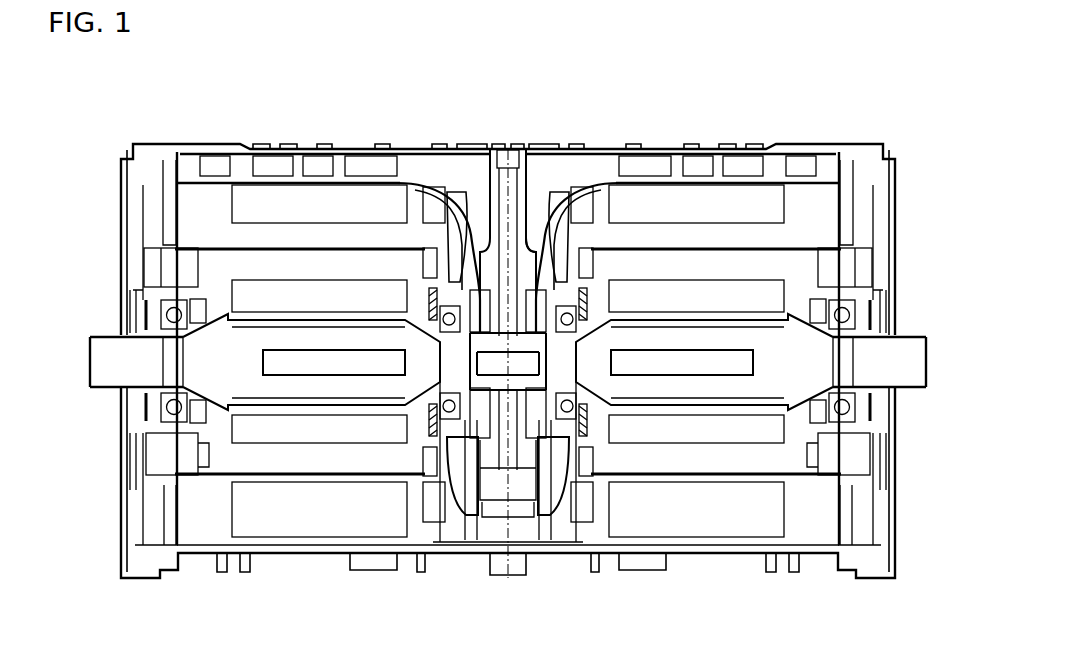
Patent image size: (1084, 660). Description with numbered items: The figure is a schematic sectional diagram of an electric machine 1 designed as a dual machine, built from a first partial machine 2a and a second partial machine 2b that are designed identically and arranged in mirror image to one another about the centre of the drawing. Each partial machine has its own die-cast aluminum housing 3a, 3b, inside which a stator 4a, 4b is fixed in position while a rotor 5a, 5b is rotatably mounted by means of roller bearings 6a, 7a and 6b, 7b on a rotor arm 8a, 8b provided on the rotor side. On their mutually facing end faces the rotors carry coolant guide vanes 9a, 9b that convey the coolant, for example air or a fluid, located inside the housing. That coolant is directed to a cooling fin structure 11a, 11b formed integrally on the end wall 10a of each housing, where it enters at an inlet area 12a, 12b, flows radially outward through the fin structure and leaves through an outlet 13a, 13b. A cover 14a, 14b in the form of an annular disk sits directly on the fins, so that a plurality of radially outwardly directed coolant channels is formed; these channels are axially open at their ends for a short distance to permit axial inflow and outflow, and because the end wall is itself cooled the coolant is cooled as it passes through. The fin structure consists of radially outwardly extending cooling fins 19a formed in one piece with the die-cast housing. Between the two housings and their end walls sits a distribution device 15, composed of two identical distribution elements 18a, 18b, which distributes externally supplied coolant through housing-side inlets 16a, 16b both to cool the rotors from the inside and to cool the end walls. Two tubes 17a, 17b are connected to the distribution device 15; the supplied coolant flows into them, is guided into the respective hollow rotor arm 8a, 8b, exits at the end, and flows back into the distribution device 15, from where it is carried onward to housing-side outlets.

The electric machine 1 is at (652, 70).
The first partial machine 2a is at (802, 130).
The second partial machine 2b is at (258, 120).
The housing 3a is at (668, 152).
The housing 3b is at (345, 152).
The stator 4a is at (662, 198).
The stator 4b is at (286, 200).
The rotor 5a is at (792, 270).
The rotor 5b is at (222, 274).
The roller bearing 6a is at (853, 320).
The roller bearing 6b is at (172, 411).
The roller bearing 7a is at (565, 470).
The roller bearing 7b is at (451, 470).
The rotor arm 8a is at (852, 414).
The rotor arm 8b is at (172, 336).
The coolant guide vanes 9a is at (578, 295).
The coolant guide vanes 9b is at (440, 298).
The end wall 10a is at (523, 165).
The cooling fin structure 11a is at (585, 272).
The cooling fin structure 11b is at (428, 277).
The inlet area 12a is at (586, 283).
The inlet area 12b is at (430, 282).
The outlet 13a is at (556, 210).
The outlet 13b is at (457, 195).
The cover 14a is at (628, 195).
The cover 14b is at (432, 190).
The distribution device 15 is at (502, 205).
The housing-side inlet 16a is at (571, 190).
The housing-side inlet 16b is at (350, 172).
The tube 17a is at (690, 375).
The tube 17b is at (293, 375).
The distribution element 18a is at (578, 320).
The distribution element 18b is at (440, 320).
The cooling fins 19a is at (598, 177).